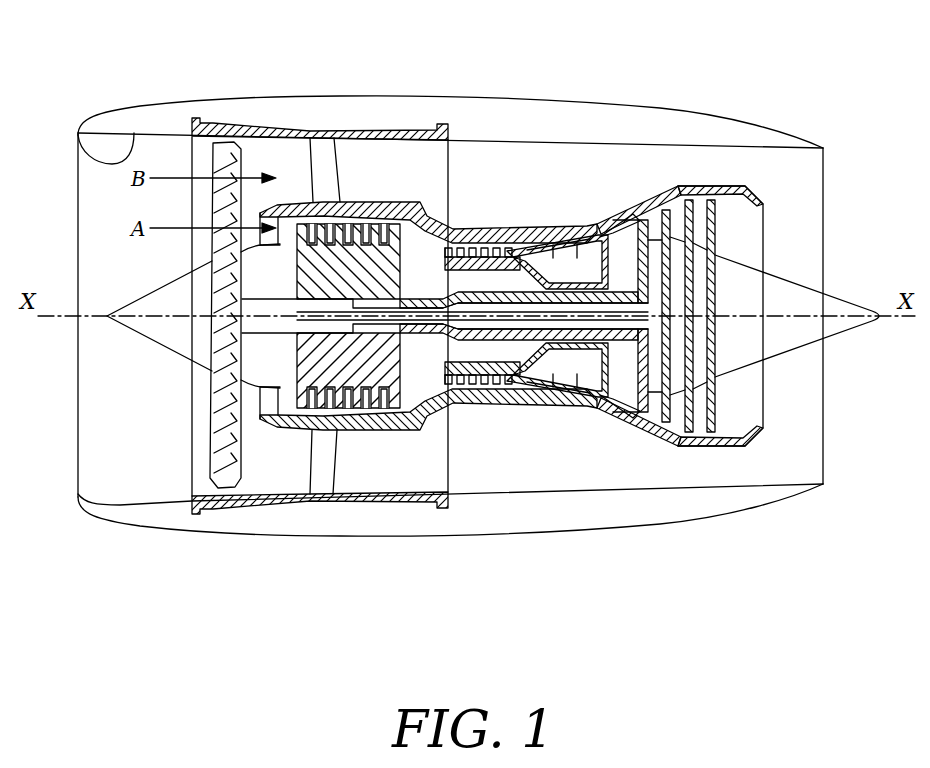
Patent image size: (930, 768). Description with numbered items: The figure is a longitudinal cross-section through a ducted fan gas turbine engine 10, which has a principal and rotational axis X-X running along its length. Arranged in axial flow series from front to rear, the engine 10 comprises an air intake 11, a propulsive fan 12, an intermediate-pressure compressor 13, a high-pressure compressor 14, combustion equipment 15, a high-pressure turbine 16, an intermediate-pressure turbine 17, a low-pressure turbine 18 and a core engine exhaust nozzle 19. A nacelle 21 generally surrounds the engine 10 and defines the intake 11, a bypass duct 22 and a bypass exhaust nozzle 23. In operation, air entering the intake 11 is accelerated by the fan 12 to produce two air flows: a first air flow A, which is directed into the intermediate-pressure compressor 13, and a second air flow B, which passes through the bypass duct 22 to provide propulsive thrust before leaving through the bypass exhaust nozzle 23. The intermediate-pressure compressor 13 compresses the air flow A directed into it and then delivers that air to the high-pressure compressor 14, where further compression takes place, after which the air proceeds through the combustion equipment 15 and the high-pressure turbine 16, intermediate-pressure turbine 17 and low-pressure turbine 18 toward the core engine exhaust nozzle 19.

The ducted fan gas turbine engine 10 is at (134, 80).
The air intake 11 is at (92, 162).
The propulsive fan 12 is at (222, 441).
The intermediate-pressure compressor 13 is at (352, 392).
The high-pressure compressor 14 is at (485, 250).
The combustion equipment 15 is at (547, 380).
The HP turbine 16 is at (600, 398).
The IP turbine 17 is at (615, 220).
The LP turbine 18 is at (660, 430).
The core engine exhaust nozzle 19 is at (753, 192).
The nacelle 21 is at (313, 97).
The bypass duct 22 is at (736, 475).
The bypass exhaust nozzle 23 is at (823, 150).